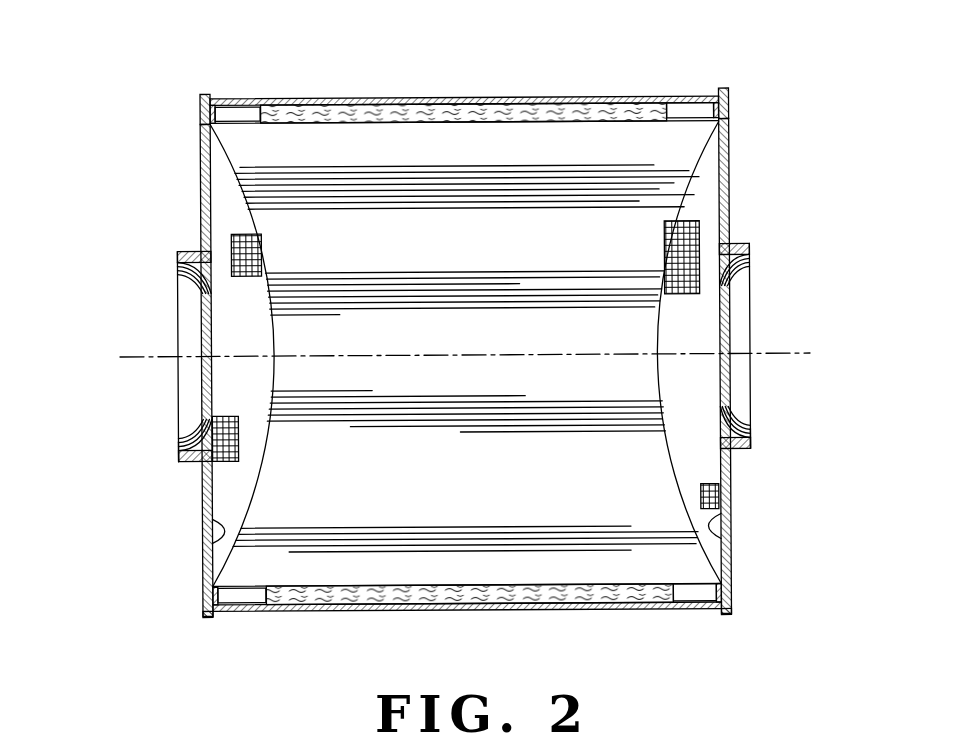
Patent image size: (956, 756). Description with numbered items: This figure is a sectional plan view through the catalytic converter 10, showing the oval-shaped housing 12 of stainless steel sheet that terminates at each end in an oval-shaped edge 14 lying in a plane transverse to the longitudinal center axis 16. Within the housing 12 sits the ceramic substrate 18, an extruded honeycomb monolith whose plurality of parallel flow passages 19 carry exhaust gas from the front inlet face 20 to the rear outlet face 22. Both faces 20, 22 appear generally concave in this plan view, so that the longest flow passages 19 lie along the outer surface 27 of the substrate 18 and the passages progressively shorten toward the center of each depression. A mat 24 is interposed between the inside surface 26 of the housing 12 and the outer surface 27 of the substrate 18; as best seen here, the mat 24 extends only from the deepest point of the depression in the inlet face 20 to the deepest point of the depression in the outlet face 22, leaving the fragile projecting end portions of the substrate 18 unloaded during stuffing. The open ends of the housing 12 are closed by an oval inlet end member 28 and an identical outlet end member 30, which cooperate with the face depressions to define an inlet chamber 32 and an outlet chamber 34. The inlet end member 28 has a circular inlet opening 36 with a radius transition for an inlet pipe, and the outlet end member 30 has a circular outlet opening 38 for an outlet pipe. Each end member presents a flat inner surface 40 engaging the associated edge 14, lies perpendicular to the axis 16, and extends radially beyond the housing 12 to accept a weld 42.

The catalytic converter 10 is at (465, 309).
The oval-shaped housing 12 is at (634, 76).
The oval-shaped edge 14 is at (204, 97).
The longitudinal center axis 16 is at (158, 356).
The substrate 18 is at (287, 120).
The parallel flow passages 19 is at (305, 195).
The front inlet face 20 is at (240, 504).
The rear outlet face 22 is at (689, 476).
The mat 24 is at (520, 112).
The inside surface 26 is at (690, 104).
The outer surface 27 is at (685, 596).
The inlet end member 28 is at (197, 182).
The outlet end member 30 is at (735, 181).
The inlet chamber 32 is at (232, 384).
The outlet chamber 34 is at (705, 332).
The circular inlet opening 36 is at (185, 437).
The circular outlet opening 38 is at (752, 432).
The flat inner surface 40 is at (213, 532).
The weld 42 is at (214, 98).